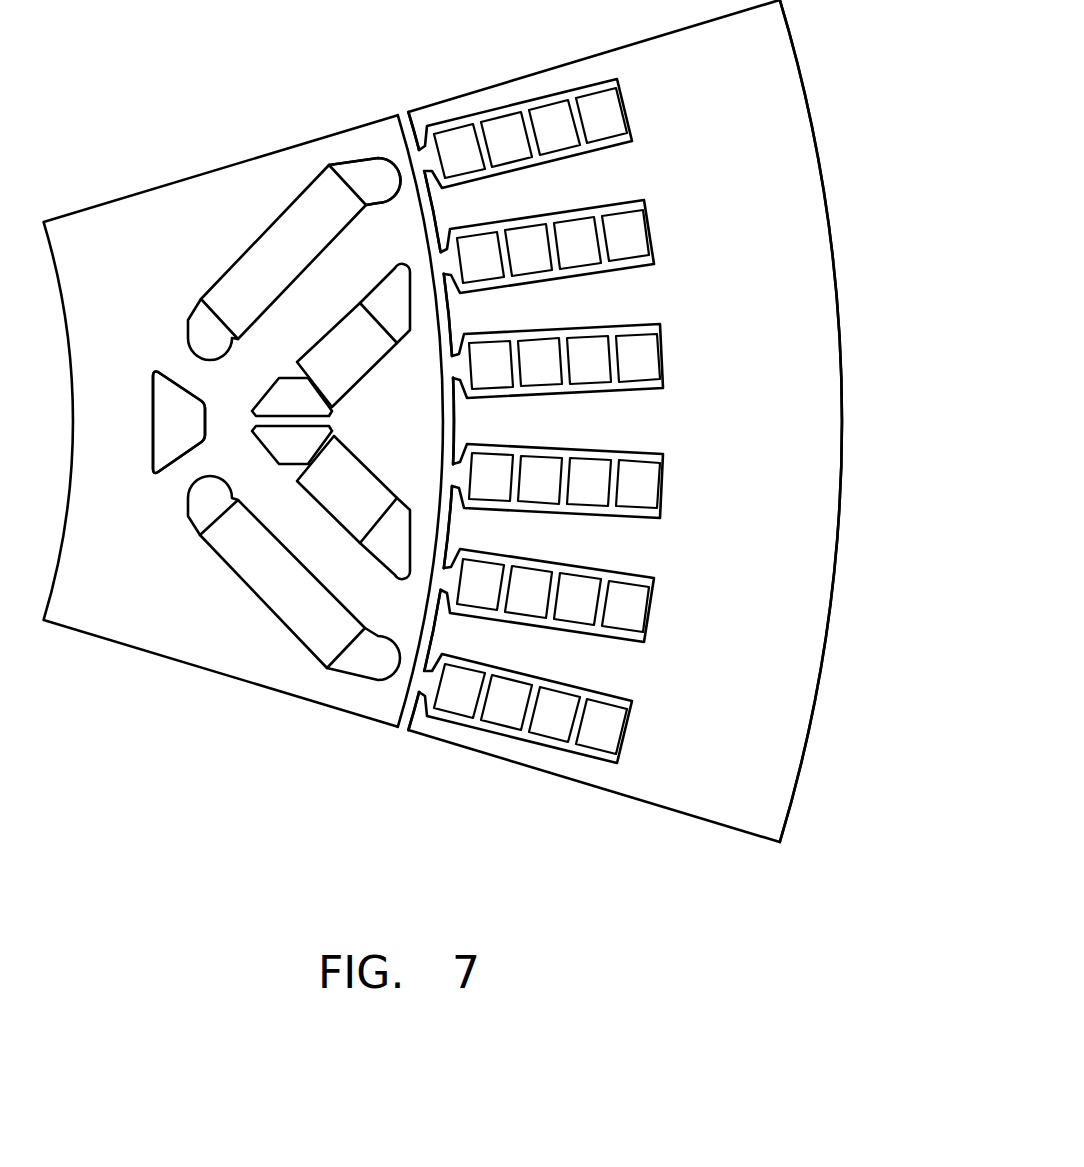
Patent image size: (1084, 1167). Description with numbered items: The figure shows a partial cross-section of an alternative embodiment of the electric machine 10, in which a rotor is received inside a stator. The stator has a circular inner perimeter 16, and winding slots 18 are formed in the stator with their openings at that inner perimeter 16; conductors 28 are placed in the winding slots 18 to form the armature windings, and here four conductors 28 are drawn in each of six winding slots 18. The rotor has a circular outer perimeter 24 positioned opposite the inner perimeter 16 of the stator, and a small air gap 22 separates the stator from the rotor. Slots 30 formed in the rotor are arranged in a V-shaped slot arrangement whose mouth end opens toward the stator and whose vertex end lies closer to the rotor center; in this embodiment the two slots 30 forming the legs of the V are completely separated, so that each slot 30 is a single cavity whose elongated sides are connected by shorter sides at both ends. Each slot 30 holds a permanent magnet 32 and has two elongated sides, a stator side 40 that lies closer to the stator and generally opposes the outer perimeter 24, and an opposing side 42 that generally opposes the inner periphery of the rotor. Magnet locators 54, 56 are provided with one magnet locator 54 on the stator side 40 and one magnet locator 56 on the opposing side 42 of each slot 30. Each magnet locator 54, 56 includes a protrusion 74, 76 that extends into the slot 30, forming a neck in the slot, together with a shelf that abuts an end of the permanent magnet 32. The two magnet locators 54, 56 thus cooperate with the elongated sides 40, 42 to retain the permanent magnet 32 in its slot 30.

The electric machine 10 is at (376, 97).
The inner perimeter 16 is at (410, 723).
The winding slots 18 is at (612, 547).
The air gap 22 is at (408, 722).
The outer perimeter 24 is at (403, 708).
The conductors 28 is at (625, 605).
The slots 30 is at (357, 173).
The permanent magnet 32 is at (322, 243).
The stator side 40 is at (285, 303).
The opposing side 42 is at (262, 236).
The magnet locator 54 is at (393, 333).
The magnet locator 56 is at (195, 298).
The protrusion 74 is at (440, 226).
The protrusion 76 is at (195, 298).